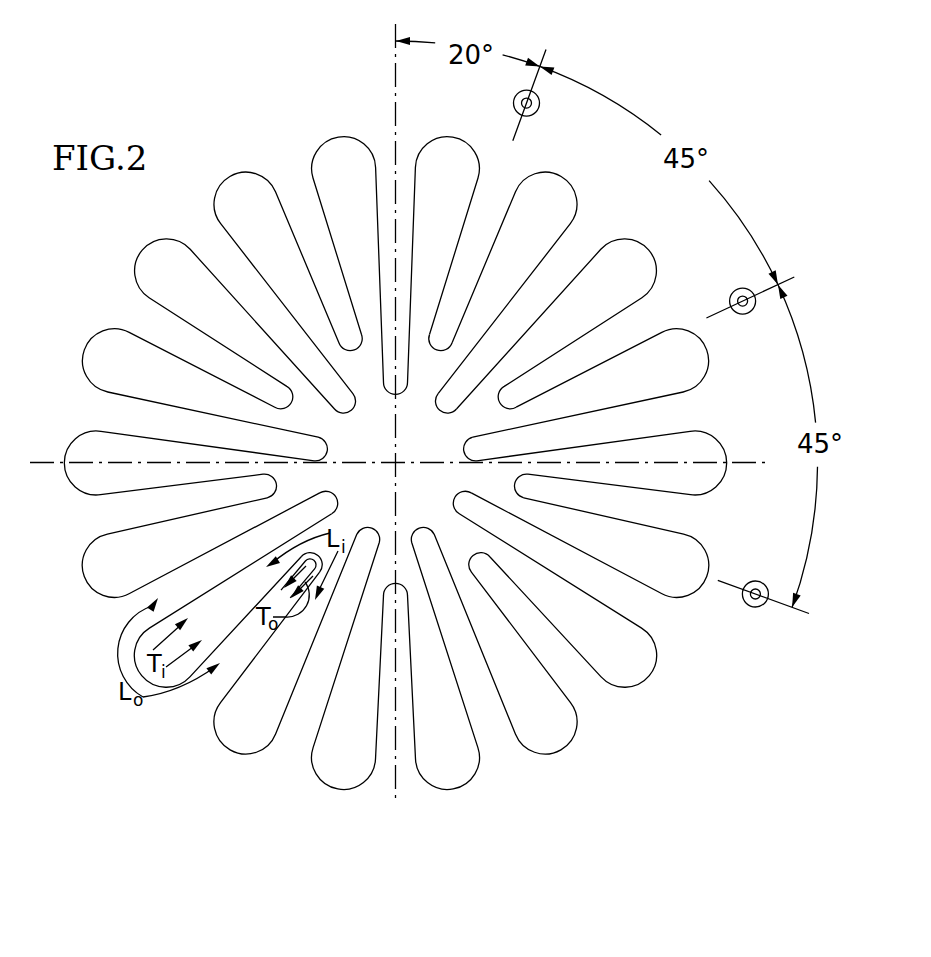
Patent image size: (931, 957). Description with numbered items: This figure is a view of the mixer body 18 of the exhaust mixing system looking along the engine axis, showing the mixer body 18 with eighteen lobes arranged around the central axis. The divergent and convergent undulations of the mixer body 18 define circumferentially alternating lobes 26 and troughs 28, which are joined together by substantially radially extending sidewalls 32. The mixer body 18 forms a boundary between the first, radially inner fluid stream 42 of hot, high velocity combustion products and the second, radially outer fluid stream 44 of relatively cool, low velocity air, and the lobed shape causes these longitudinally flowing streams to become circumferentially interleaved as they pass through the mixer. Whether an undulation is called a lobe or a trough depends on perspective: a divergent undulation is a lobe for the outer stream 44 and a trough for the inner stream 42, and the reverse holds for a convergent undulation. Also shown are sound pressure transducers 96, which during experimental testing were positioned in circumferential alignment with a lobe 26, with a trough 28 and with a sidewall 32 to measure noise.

The mixer body 18 is at (262, 142).
The lobe 26 is at (700, 588).
The trough 28 is at (445, 350).
The sidewall 32 is at (651, 330).
The first, radially inner fluid stream 42 is at (554, 226).
The second, radially outer fluid stream 44 is at (586, 266).
The sound pressure transducer 96 is at (537, 110).